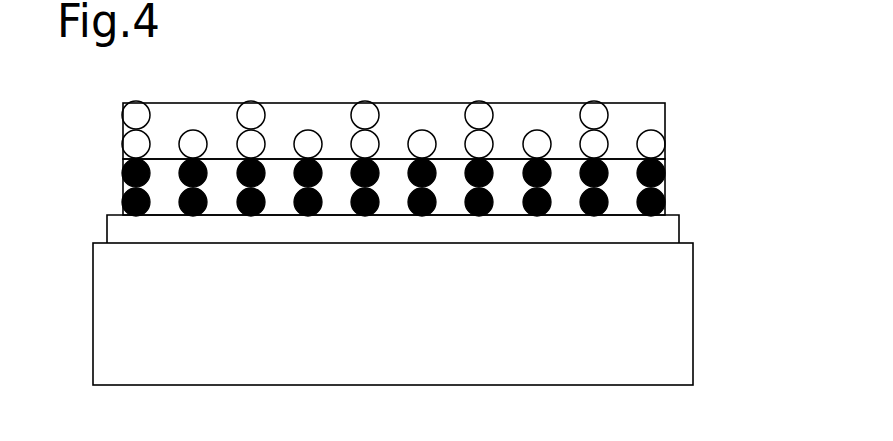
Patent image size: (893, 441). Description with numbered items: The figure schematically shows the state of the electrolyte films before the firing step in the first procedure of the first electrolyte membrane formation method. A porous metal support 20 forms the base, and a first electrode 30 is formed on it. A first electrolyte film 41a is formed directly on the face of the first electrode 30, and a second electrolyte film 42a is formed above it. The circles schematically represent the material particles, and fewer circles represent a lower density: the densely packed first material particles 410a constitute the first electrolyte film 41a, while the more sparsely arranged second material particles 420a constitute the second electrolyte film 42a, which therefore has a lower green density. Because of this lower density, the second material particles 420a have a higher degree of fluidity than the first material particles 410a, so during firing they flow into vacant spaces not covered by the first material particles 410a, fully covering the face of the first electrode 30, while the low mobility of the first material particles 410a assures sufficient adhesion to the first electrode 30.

The porous metal support 20 is at (122, 330).
The first electrode 30 is at (122, 227).
The first electrolyte film 41a is at (658, 185).
The second electrolyte film 42a is at (653, 129).
The first material particles 410a is at (123, 165).
The second material particles 420a is at (251, 117).